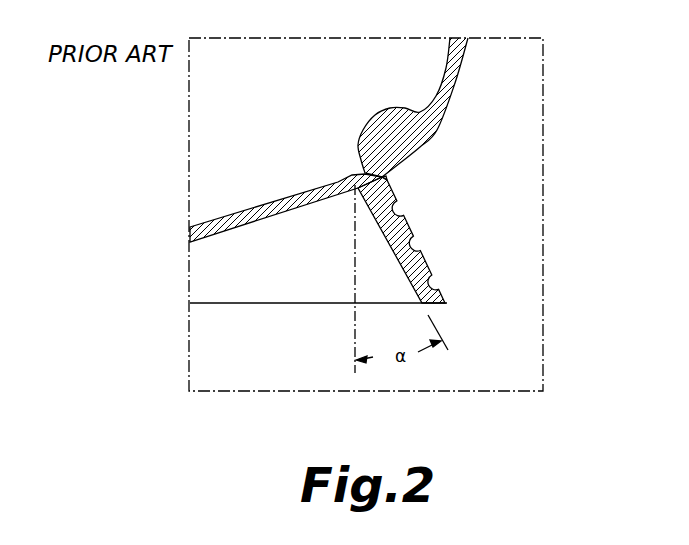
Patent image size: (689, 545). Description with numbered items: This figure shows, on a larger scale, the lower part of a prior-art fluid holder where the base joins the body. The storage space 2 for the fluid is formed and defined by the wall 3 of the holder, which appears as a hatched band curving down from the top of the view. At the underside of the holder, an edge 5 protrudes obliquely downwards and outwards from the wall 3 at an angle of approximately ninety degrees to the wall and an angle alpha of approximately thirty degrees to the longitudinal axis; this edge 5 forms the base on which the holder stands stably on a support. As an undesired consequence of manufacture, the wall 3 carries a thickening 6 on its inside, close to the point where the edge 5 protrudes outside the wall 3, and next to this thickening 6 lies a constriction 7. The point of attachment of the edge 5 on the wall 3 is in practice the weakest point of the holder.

The storage space 2 is at (270, 135).
The wall 3 is at (460, 73).
The edge 5 is at (408, 267).
The thickening 6 is at (385, 137).
The constriction 7 is at (387, 180).